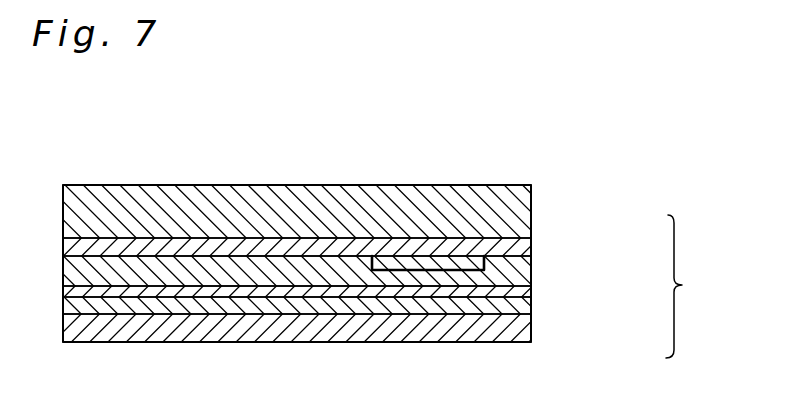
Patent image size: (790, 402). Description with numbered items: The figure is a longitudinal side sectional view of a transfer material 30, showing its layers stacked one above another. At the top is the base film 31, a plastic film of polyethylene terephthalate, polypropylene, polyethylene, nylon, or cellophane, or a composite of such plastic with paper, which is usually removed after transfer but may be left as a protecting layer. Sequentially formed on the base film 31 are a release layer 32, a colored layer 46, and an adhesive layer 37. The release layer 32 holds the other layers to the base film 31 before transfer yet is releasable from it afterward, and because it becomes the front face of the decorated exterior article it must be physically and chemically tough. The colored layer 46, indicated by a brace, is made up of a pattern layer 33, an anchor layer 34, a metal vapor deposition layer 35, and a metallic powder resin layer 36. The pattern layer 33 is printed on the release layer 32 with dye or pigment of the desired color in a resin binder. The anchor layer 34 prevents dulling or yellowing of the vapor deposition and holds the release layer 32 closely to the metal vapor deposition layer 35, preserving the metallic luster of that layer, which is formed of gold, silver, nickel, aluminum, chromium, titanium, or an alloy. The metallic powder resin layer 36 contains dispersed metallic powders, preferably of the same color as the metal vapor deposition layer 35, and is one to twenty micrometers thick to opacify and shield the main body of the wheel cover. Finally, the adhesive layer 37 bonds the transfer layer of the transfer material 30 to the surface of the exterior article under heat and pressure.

The transfer material 30 is at (186, 168).
The base film 31 is at (531, 185).
The release layer 32 is at (527, 242).
The pattern layer 33 is at (486, 268).
The anchor layer 34 is at (517, 273).
The metal vapor deposition layer 35 is at (531, 289).
The metallic powder resin layer 36 is at (531, 308).
The adhesive layer 37 is at (531, 338).
The colored layer 46 is at (695, 286).